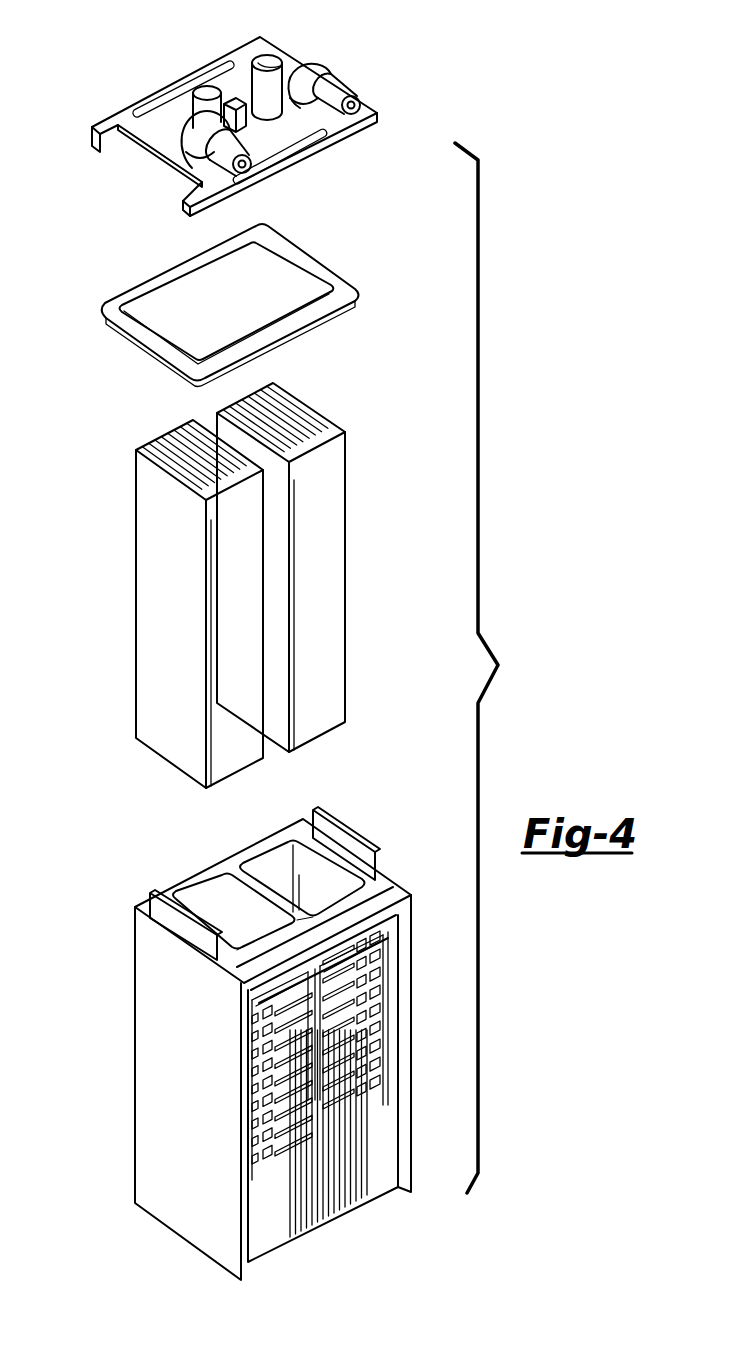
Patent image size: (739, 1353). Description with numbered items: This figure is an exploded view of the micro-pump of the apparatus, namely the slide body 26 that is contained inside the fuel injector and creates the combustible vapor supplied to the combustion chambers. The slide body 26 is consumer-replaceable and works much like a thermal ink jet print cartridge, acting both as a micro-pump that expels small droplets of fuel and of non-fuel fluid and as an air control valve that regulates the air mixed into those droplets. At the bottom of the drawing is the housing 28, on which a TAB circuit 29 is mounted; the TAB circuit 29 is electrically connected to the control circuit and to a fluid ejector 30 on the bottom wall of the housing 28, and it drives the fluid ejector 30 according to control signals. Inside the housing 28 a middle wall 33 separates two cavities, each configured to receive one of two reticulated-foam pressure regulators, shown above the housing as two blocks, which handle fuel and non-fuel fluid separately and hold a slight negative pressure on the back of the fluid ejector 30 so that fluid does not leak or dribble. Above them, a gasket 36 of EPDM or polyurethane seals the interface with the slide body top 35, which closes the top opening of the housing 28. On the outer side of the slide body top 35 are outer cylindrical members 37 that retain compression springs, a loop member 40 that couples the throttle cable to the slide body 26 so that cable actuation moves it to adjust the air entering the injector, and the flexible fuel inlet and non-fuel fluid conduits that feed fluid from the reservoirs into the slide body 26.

The slide body 26 is at (498, 668).
The housing 28 is at (160, 1000).
The TAB circuit 29 is at (387, 997).
The fluid ejector 30 is at (373, 1197).
The middle wall 33 is at (262, 895).
The slide body top 35 is at (126, 76).
The gasket 36 is at (112, 310).
The outer cylindrical members 37 is at (190, 137).
The loop member 40 is at (298, 0).